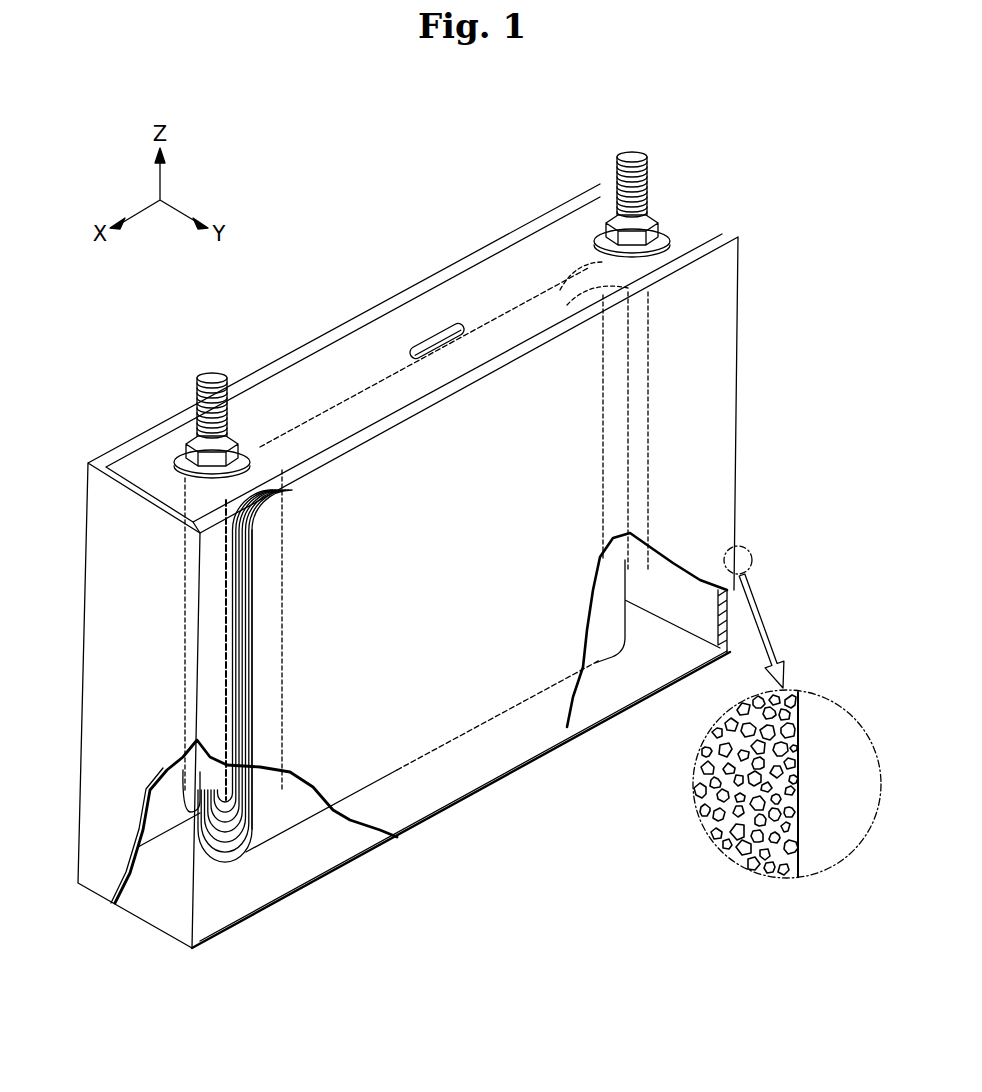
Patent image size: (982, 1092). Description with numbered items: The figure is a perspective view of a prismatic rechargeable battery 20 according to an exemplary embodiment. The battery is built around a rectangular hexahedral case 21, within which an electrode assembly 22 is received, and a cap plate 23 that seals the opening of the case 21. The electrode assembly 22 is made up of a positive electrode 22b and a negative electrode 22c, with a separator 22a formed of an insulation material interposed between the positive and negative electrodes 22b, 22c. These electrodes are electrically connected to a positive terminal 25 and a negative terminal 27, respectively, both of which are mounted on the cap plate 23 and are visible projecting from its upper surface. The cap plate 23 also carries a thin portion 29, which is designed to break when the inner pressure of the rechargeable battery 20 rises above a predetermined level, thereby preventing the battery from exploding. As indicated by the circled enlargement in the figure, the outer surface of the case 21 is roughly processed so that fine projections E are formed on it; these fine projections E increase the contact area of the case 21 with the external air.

The rechargeable battery 20 is at (353, 144).
The case 21 is at (736, 322).
The electrode assembly 22 is at (212, 872).
The separator 22a is at (262, 837).
The positive electrode 22b is at (167, 810).
The negative electrode 22c is at (625, 553).
The cap plate 23 is at (314, 366).
The positive terminal 25 is at (212, 374).
The negative terminal 27 is at (632, 153).
The thin portion 29 is at (431, 333).
The fine projections E is at (800, 842).